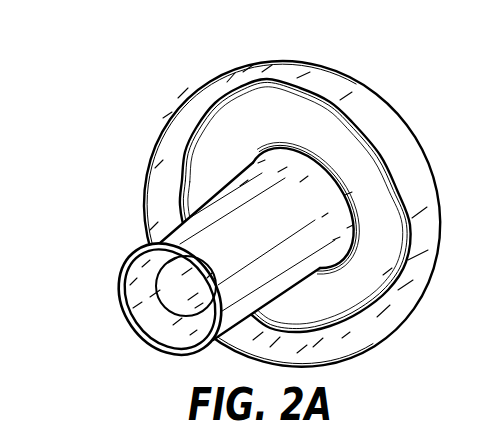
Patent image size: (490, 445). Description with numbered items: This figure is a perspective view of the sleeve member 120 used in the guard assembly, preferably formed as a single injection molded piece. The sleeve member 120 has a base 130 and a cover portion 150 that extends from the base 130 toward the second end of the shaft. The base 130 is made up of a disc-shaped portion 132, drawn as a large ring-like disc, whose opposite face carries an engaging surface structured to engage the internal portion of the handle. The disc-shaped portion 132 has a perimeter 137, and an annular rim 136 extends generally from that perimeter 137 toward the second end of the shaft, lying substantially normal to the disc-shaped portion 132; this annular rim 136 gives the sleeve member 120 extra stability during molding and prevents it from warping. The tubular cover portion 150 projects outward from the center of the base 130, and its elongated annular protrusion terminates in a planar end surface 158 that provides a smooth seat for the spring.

The sleeve member 120 is at (121, 222).
The base 130 is at (130, 136).
The disc-shaped portion 132 is at (243, 46).
The annular rim 136 is at (200, 76).
The perimeter 137 is at (383, 98).
The cover portion 150 is at (197, 368).
The planar end surface 158 is at (124, 286).